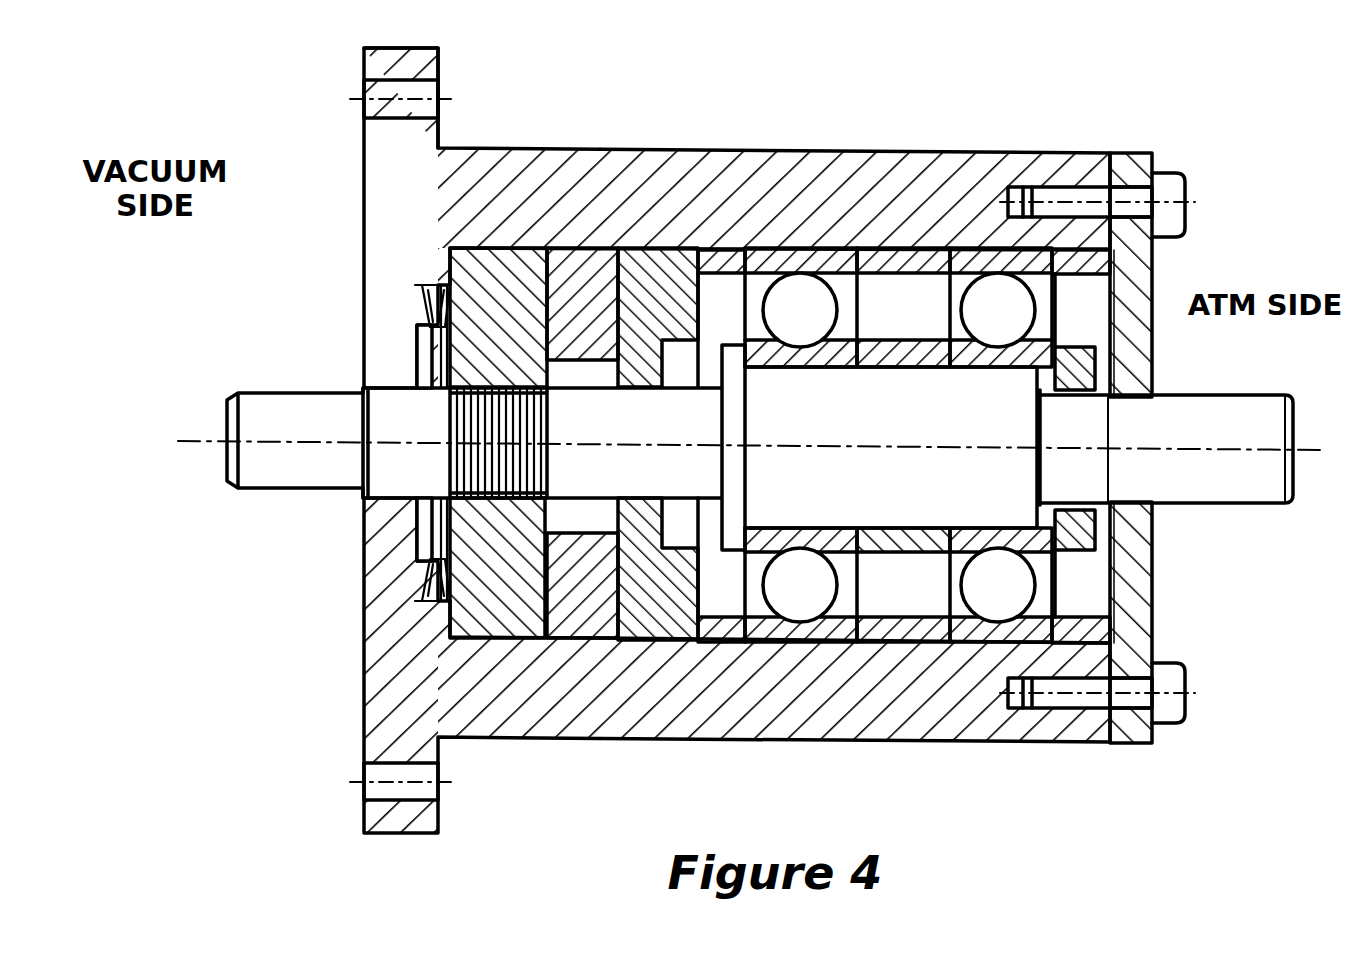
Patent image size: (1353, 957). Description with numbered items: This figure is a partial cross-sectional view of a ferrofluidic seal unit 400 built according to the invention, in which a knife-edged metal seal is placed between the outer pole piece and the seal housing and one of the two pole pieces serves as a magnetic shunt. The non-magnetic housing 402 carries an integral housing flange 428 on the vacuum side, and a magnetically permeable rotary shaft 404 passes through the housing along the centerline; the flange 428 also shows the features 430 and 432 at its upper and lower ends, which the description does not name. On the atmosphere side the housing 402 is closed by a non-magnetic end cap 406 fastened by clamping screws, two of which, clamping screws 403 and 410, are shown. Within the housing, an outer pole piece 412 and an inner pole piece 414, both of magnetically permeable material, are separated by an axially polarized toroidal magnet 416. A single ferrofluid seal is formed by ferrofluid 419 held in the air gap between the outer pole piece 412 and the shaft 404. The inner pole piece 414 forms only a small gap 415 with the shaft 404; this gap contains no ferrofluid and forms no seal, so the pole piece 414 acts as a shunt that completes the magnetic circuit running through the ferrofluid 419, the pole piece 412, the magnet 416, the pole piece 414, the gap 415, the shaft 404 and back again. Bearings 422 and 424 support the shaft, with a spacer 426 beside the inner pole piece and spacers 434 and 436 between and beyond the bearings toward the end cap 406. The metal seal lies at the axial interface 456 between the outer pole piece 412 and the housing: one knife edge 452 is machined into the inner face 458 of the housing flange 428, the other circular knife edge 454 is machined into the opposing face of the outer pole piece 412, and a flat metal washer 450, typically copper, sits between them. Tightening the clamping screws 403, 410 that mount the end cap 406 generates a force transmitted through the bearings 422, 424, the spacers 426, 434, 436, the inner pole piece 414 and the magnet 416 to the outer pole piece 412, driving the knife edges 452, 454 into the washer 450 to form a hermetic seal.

The ferrofluidic seal unit 400 is at (1060, 137).
The housing 402 is at (855, 700).
The clamping screw 403 is at (1187, 196).
The shaft 404 is at (1225, 483).
The end cap 406 is at (1140, 570).
The clamping screw 410 is at (1187, 682).
The outer pole piece 412 is at (450, 247).
The inner pole piece 414 is at (668, 270).
The gap 415 is at (650, 390).
The magnet 416 is at (583, 625).
The ferrofluid 419 is at (508, 410).
The bearing 422 is at (800, 265).
The bearing 424 is at (975, 262).
The spacer 426 is at (722, 628).
The integral housing flange 428 is at (372, 64).
The mounting hole 430 is at (364, 108).
The mounting hole 432 is at (368, 797).
The spacer 434 is at (930, 627).
The spacer 436 is at (1078, 635).
The metal flat washer 450 is at (420, 348).
The knife edge 452 is at (426, 568).
The knife edge 454 is at (472, 605).
The axial interface 456 is at (437, 620).
The inner face 458 is at (436, 269).